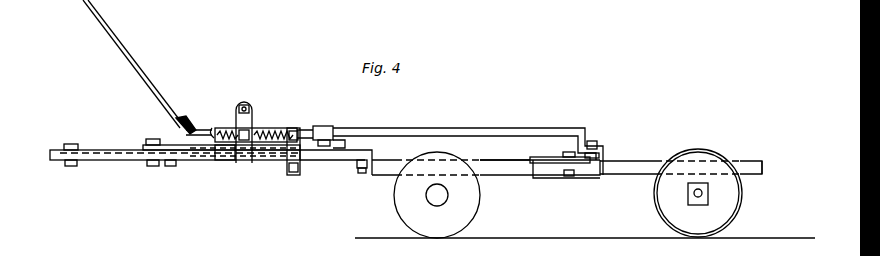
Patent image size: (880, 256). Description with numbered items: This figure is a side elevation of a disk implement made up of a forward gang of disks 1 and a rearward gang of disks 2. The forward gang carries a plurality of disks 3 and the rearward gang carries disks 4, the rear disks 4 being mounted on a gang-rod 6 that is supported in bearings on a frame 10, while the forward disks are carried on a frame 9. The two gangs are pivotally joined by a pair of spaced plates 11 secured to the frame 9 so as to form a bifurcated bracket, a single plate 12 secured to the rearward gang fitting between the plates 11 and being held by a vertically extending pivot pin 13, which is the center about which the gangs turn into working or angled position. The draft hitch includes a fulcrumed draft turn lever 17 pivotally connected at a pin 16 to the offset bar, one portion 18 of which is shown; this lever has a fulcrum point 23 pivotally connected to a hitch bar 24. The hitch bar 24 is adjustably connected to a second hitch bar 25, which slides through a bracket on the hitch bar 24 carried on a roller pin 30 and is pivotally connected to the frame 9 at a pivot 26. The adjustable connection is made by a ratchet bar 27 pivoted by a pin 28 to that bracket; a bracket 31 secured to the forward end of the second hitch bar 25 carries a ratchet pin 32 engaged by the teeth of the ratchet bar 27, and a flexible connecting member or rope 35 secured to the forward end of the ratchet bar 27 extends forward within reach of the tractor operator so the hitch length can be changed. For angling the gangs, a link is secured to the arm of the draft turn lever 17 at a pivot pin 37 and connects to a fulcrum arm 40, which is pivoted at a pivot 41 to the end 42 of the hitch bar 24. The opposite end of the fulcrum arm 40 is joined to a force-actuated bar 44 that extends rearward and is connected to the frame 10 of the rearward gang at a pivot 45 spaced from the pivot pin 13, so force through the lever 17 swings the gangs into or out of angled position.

The forward gang of disks 1 is at (509, 159).
The rearward gang of disks 2 is at (766, 154).
The disks 3 is at (470, 214).
The disks 4 is at (703, 150).
The gang-rod 6 is at (705, 193).
The frame 9 is at (486, 167).
The frame 10 is at (745, 160).
The spaced plates 11 is at (549, 164).
The single plate 12 is at (590, 170).
The pivot pin 13 is at (569, 177).
The pin 16 is at (70, 167).
The fulcrumed draft turn lever 17 is at (122, 161).
The portion of offset bar 18 is at (100, 161).
The fulcrum point 23 is at (153, 167).
The hitch bar 24 is at (200, 161).
The second hitch bar 25 is at (322, 161).
The pivot 26 is at (362, 174).
The ratchet bar 27 is at (266, 128).
The pin 28 is at (290, 146).
The pin 30 is at (222, 163).
The bracket 31 is at (252, 117).
The ratchet pin 32 is at (242, 104).
The flexible connecting member or rope 35 is at (111, 31).
The pivot pin 37 is at (171, 167).
The fulcrum arm 40 is at (325, 127).
The pivot 41 is at (300, 176).
The end of hitch bar 42 is at (340, 130).
The force-actuated bar 44 is at (554, 128).
The pivot 45 is at (598, 142).